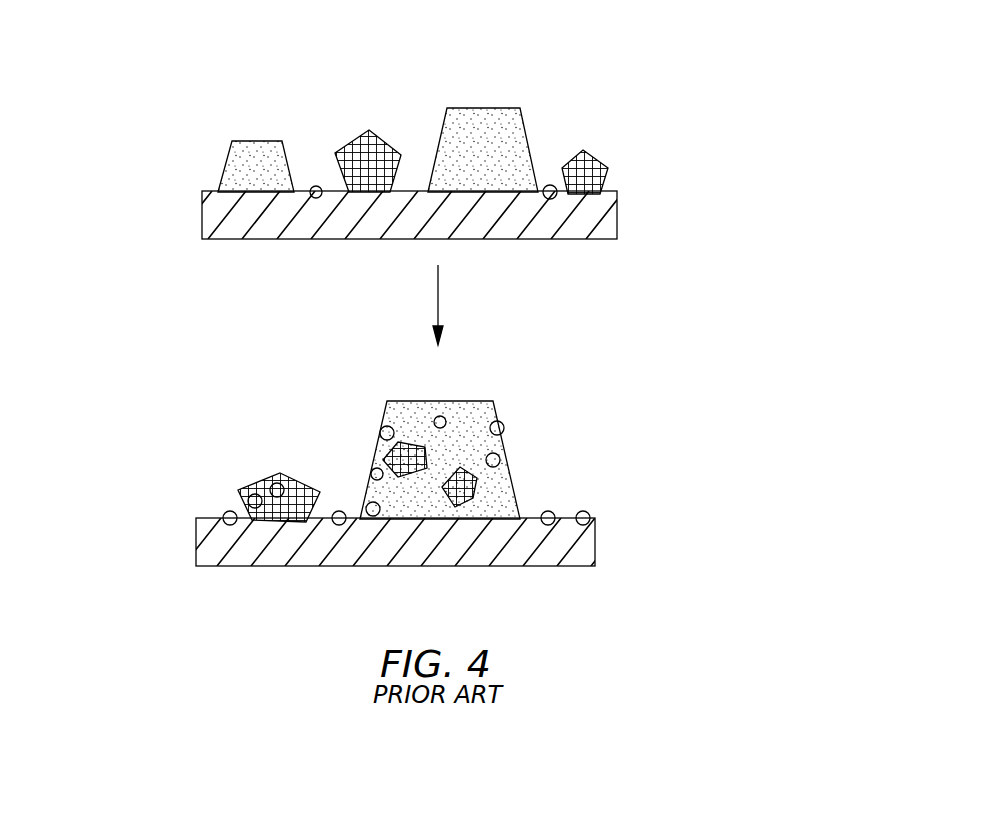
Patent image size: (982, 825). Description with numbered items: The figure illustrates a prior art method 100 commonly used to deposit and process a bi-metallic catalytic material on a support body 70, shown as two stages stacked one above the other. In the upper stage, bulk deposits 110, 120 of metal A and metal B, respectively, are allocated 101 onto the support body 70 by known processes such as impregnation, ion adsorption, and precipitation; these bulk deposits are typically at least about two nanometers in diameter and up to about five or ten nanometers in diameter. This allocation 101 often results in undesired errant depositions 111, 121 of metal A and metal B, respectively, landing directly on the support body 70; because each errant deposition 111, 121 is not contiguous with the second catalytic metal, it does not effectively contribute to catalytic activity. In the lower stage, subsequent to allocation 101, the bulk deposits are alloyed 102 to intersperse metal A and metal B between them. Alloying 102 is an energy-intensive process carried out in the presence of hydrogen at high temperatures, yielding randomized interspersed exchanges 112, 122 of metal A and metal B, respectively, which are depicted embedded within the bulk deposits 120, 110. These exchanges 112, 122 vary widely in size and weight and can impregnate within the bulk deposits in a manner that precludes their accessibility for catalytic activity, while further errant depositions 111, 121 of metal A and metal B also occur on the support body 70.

The support body 70 is at (617, 213).
The prior art method 100 is at (740, 134).
The allocation 101 is at (172, 211).
The alloying 102 is at (152, 549).
The bulk deposit of metal A 110 is at (277, 141).
The errant deposition of metal A 111 is at (316, 186).
The interspersed exchange of metal A 112 is at (252, 494).
The bulk deposit of metal B 120 is at (386, 143).
The errant deposition of metal B 121 is at (552, 186).
The interspersed exchange of metal B 122 is at (503, 431).